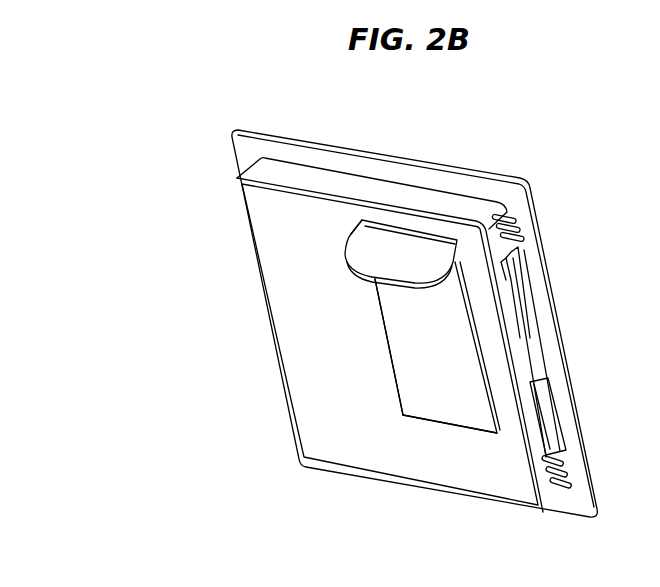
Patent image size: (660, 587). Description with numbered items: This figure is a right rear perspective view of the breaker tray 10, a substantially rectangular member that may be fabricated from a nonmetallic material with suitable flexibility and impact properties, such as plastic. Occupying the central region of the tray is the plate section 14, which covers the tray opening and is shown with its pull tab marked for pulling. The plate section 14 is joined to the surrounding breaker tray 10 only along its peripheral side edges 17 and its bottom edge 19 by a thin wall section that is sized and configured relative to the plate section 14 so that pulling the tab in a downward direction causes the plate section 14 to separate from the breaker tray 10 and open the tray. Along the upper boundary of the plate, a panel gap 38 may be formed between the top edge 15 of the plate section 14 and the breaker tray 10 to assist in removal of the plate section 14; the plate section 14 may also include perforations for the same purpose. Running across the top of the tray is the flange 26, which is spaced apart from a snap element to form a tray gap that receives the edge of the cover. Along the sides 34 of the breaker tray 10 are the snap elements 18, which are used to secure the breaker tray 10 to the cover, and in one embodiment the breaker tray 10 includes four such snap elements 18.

The breaker tray 10 is at (532, 186).
The plate section 14 is at (405, 328).
The top edge 15 is at (358, 252).
The peripheral side edges 17 is at (393, 385).
The snap elements 18 is at (522, 285).
The bottom edge 19 is at (435, 425).
The flange 26 is at (372, 152).
The sides 34 is at (532, 366).
The panel gap 38 is at (403, 232).